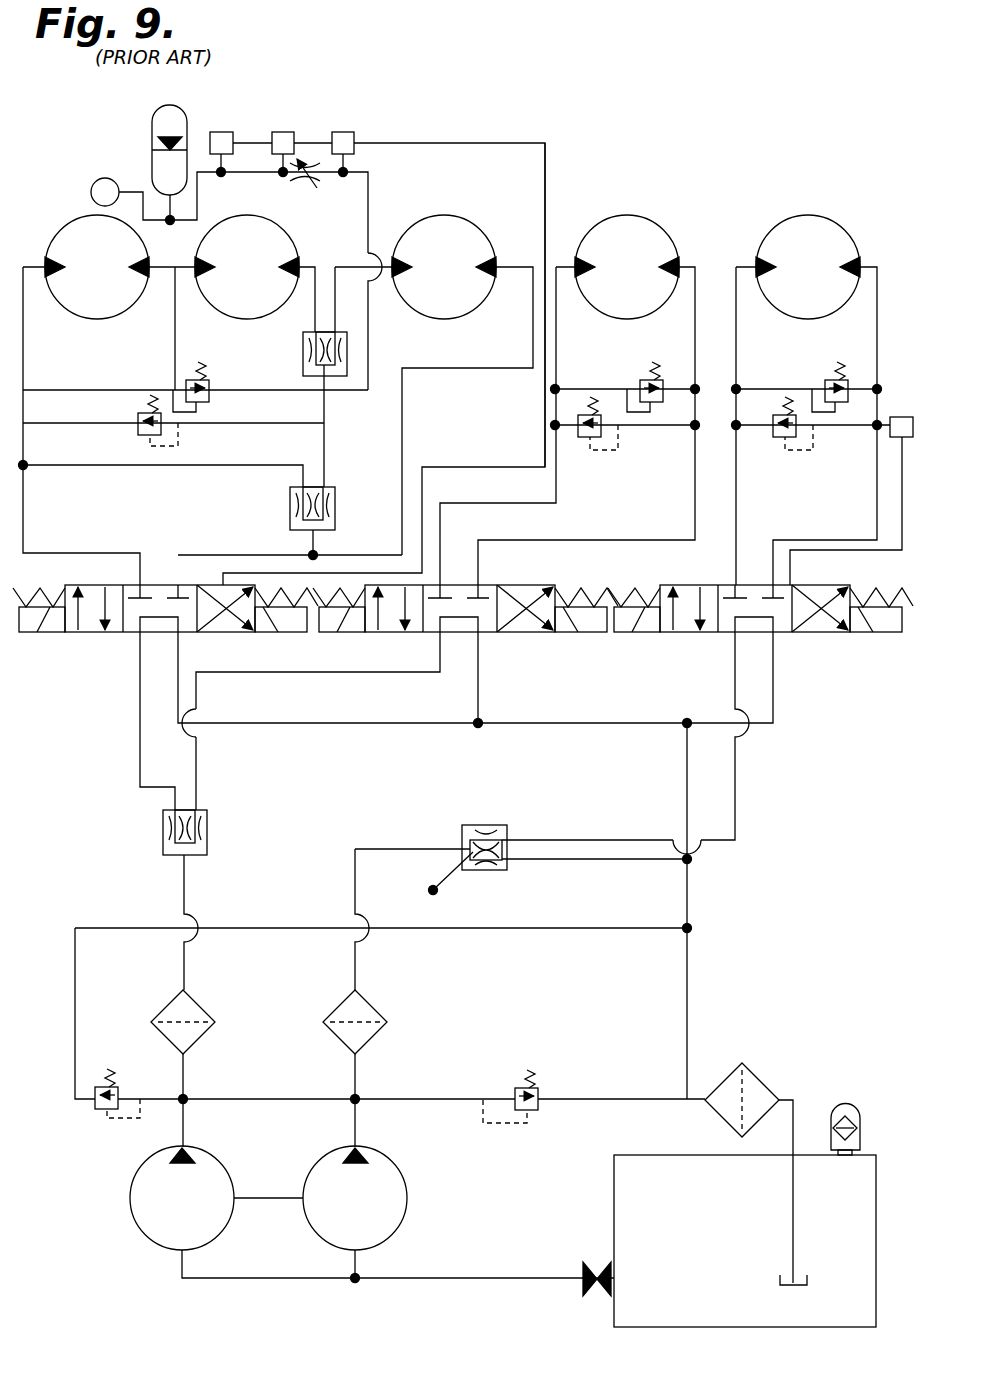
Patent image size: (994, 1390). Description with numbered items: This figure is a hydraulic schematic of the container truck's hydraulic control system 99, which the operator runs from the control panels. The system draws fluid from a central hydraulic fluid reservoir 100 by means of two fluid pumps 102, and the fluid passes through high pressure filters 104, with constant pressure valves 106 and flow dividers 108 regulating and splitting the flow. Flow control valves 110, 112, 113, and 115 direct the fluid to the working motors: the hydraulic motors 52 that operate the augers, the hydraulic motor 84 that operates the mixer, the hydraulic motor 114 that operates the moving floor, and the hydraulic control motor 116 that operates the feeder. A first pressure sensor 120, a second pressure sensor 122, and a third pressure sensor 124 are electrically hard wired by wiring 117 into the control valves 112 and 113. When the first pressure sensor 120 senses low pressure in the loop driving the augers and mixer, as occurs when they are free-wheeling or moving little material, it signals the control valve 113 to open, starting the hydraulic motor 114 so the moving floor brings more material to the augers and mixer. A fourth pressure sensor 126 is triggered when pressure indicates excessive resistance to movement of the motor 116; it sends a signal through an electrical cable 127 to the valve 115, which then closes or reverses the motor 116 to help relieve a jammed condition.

The hydraulic motors 52 is at (82, 326).
The hydraulic motor 84 is at (494, 218).
The hydraulic control system 99 is at (764, 881).
The central hydraulic fluid reservoir 100 is at (614, 1196).
The fluid pumps 102 is at (130, 1188).
The high pressure filters 104 is at (206, 1000).
The constant pressure valves 106 is at (212, 380).
The flow dividers 108 is at (349, 361).
The flow control valve 110 is at (480, 827).
The flow control valve 112 is at (112, 645).
The flow control valve 113 is at (407, 645).
The hydraulic motor 114 is at (672, 220).
The flow control valve 115 is at (708, 640).
The hydraulic control motor 116 is at (849, 220).
The wiring 117 is at (547, 203).
The first pressure sensor 120 is at (345, 131).
The second pressure sensor 122 is at (285, 131).
The third pressure sensor 124 is at (225, 131).
The fourth pressure sensor 126 is at (902, 417).
The electrical cable 127 is at (832, 550).